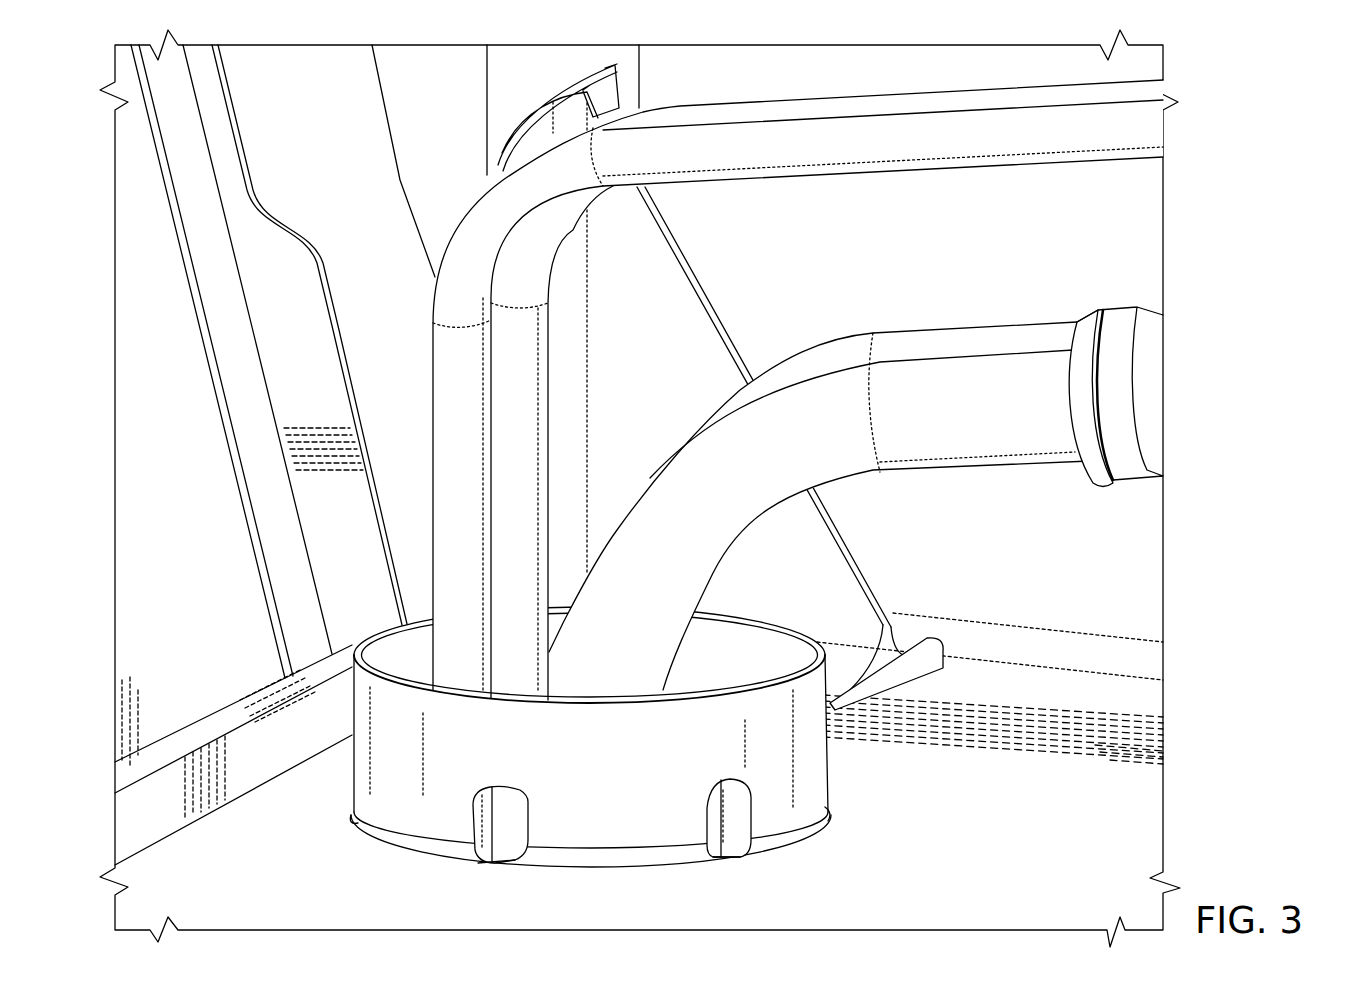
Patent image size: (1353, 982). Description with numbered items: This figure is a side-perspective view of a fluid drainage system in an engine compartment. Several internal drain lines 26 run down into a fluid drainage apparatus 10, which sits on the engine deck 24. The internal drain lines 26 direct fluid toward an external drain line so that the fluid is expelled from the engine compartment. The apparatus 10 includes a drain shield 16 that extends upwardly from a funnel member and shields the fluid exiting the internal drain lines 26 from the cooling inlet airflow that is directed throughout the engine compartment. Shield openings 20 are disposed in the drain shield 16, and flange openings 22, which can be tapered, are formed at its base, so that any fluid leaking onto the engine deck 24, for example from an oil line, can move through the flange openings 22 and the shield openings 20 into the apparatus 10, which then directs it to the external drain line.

The fluid drainage apparatus 10 is at (833, 753).
The drain shield 16 is at (396, 799).
The shield opening 20 is at (524, 822).
The flange opening 22 is at (496, 868).
The engine deck 24 is at (1014, 858).
The internal drain line 26 is at (723, 112).